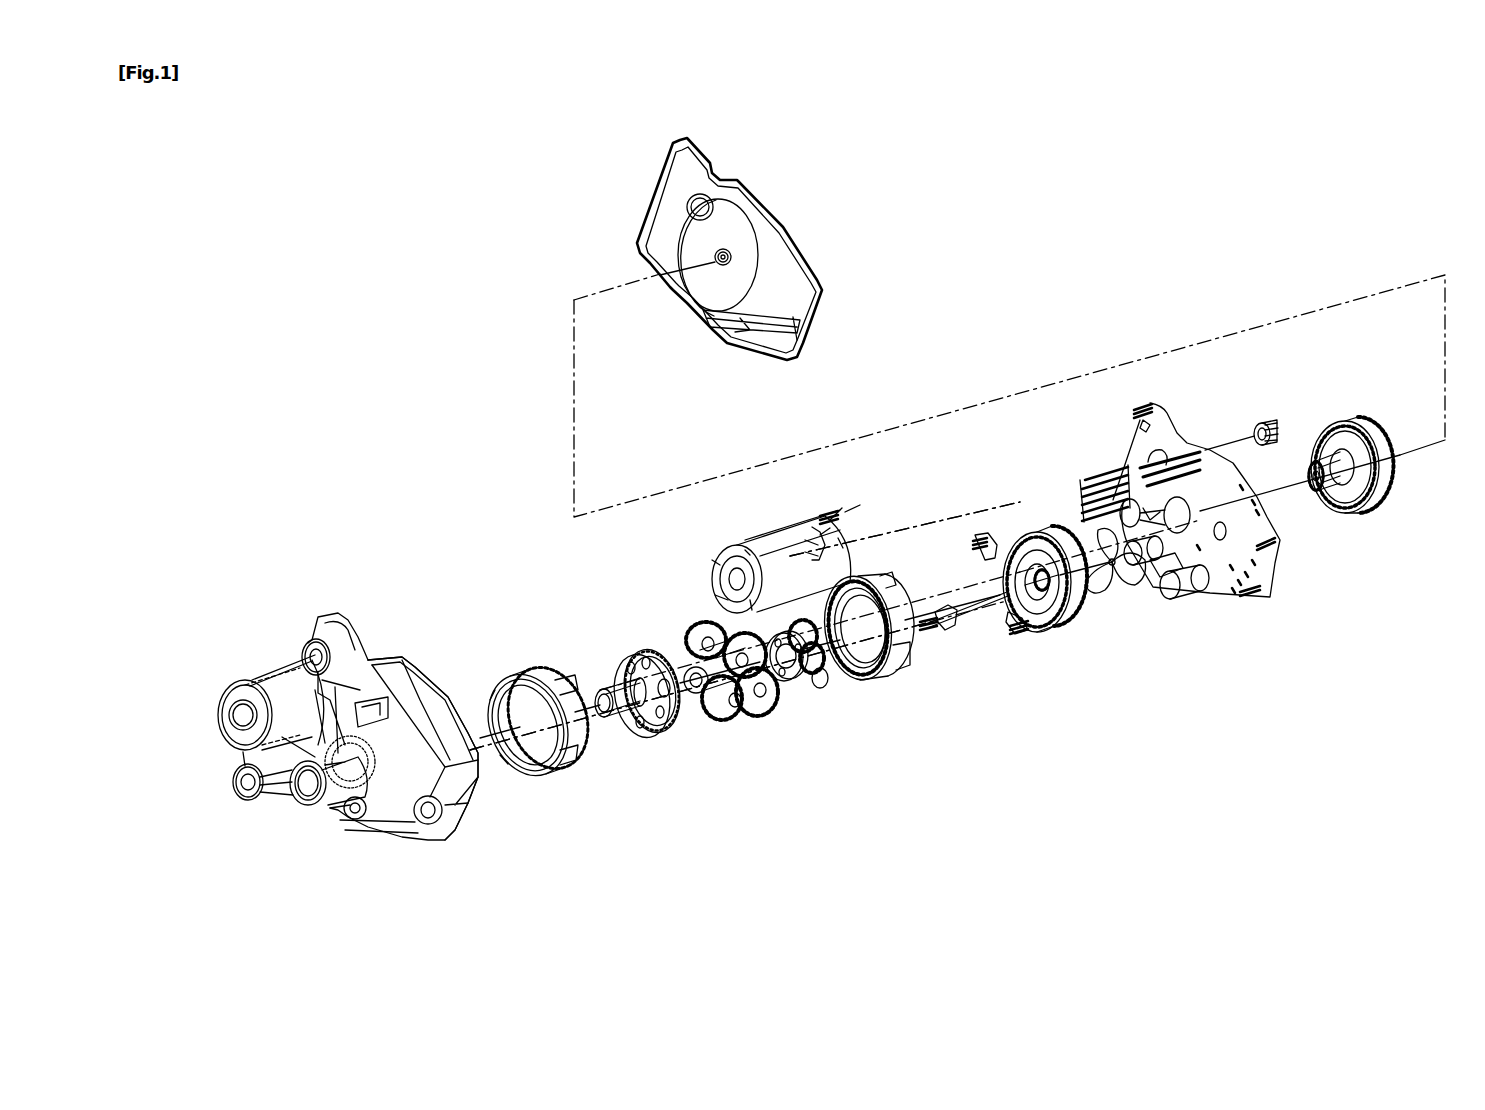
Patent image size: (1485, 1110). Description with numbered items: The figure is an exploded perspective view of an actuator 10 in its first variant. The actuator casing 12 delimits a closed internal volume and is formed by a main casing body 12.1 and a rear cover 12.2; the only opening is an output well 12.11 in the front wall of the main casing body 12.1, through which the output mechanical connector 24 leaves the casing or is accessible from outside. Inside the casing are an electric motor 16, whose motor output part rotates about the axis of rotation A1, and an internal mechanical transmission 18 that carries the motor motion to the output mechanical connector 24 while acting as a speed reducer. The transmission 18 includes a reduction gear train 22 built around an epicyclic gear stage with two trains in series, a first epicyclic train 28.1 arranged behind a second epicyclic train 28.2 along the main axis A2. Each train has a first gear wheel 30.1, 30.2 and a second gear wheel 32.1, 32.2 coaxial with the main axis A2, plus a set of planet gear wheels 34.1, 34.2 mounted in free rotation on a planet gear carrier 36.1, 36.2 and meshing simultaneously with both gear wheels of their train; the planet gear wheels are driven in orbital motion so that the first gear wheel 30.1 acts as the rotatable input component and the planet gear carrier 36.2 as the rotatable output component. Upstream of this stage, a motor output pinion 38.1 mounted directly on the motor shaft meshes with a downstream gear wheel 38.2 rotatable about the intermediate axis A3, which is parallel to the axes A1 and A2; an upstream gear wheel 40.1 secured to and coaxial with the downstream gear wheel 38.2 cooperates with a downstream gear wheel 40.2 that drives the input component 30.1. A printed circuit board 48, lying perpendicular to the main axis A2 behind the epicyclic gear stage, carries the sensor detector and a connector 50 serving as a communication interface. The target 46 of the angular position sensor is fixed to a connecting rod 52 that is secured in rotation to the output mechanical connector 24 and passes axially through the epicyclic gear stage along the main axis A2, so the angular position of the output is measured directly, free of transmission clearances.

The actuator 10 is at (322, 298).
The actuator casing 12 is at (262, 597).
The main casing body 12.1 is at (410, 680).
The output well 12.11 is at (307, 792).
The rear cover 12.2 is at (787, 197).
The electric motor 16 is at (755, 542).
The internal mechanical transmission 18 is at (1005, 780).
The reduction gear train 22 is at (1072, 703).
The output mechanical connector 24 is at (617, 727).
The first epicyclic train 28.1 is at (818, 718).
The second epicyclic train 28.2 is at (680, 608).
The first gear wheel 30.1 is at (1040, 615).
The first gear wheel 30.2 is at (778, 690).
The second gear wheel 32.1 is at (877, 682).
The second gear wheel 32.2 is at (832, 672).
The planet gear wheels 34.1 is at (828, 700).
The planet gear wheels 34.2 is at (727, 722).
The planet gear carrier 36.1 is at (793, 680).
The planet gear carrier 36.2 is at (620, 655).
The motor output pinion 38.1 is at (1265, 420).
The downstream gear wheel 38.2 is at (1352, 422).
The upstream gear wheel 40.1 is at (1340, 505).
The downstream gear wheel 40.2 is at (1063, 632).
The target 46 is at (1130, 590).
The printed circuit board 48 is at (1280, 598).
The connector 50 is at (1100, 480).
The connecting rod 52 is at (975, 598).
The axis of rotation A1 is at (962, 520).
The main axis A2 is at (595, 727).
The intermediate axis A3 is at (1420, 465).